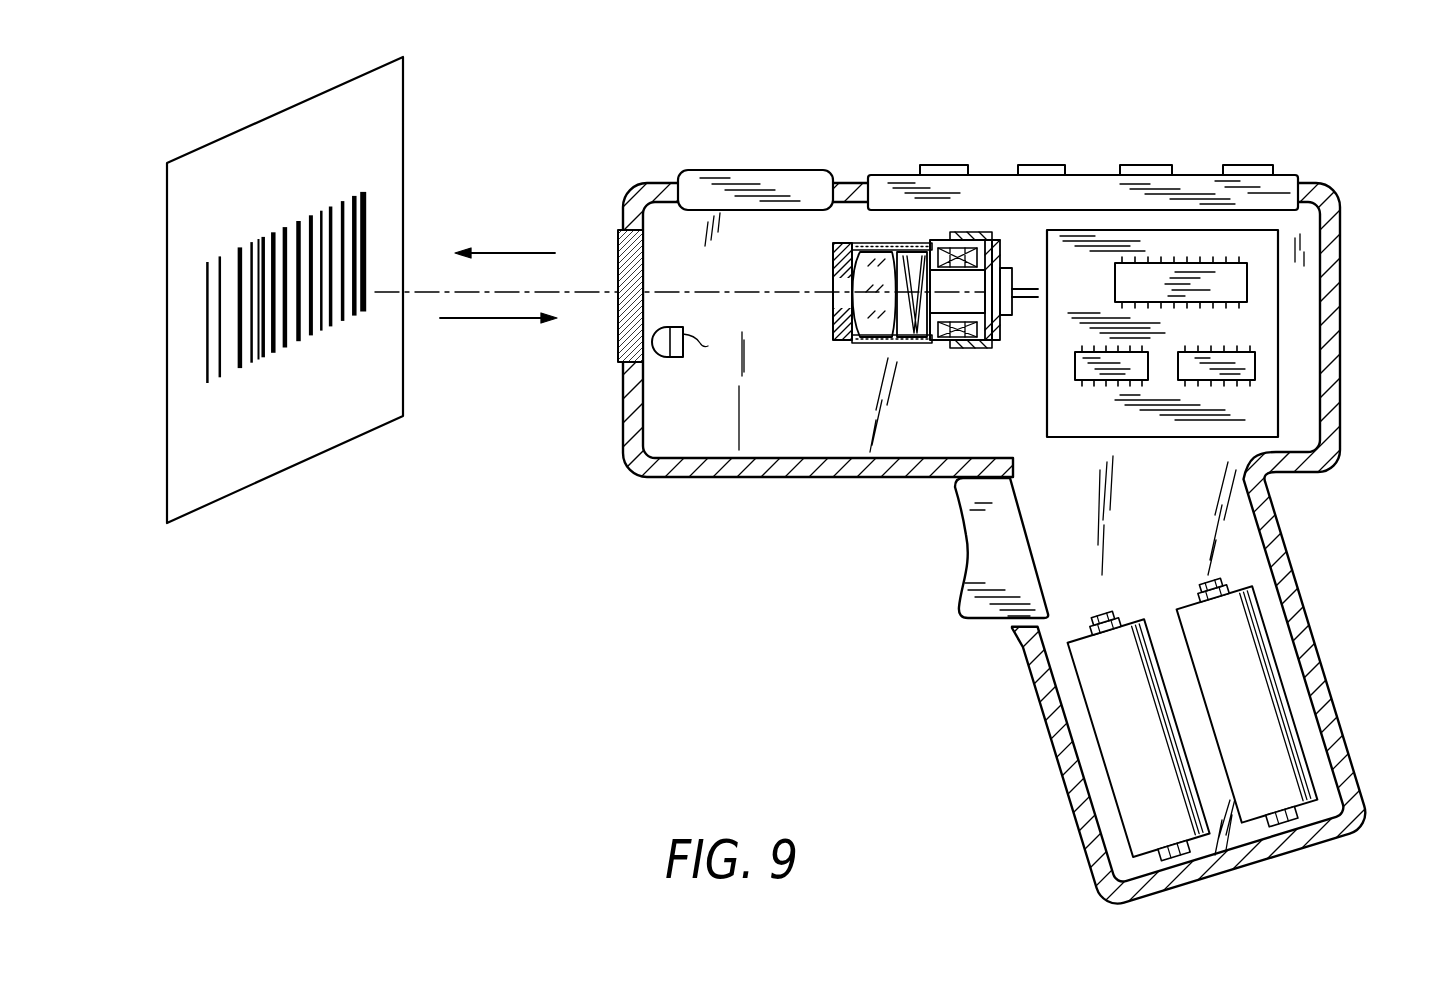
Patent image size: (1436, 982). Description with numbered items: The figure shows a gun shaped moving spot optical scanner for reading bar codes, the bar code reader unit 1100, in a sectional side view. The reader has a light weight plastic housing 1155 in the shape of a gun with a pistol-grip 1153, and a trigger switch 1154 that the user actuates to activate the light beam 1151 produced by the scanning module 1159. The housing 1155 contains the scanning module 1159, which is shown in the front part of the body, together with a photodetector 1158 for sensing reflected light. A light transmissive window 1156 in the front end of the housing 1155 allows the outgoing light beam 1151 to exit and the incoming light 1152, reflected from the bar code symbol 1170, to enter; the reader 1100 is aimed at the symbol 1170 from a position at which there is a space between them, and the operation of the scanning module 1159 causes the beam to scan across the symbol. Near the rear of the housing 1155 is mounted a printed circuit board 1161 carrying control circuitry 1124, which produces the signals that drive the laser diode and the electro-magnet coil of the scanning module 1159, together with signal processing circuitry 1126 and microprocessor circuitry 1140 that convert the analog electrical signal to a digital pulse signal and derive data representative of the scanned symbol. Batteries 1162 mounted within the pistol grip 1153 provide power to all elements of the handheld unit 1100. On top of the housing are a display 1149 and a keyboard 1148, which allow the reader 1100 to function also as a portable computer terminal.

The bar code reader unit 1100 is at (798, 705).
The control circuitry 1124 is at (1078, 370).
The signal processing circuitry 1126 is at (1228, 383).
The microprocessor circuitry 1140 is at (1135, 264).
The keyboard 1148 is at (1208, 180).
The display 1149 is at (725, 170).
The light beam 1151 is at (497, 252).
The incoming light 1152 is at (500, 322).
The pistol-grip 1153 is at (1063, 772).
The trigger switch 1154 is at (960, 609).
The housing 1155 is at (1340, 372).
The light transmissive window 1156 is at (618, 250).
The photodetector 1158 is at (675, 360).
The scanning module 1159 is at (957, 233).
The printed circuit board 1161 is at (1280, 293).
The batteries 1162 is at (1230, 592).
The symbol 1170 is at (311, 224).